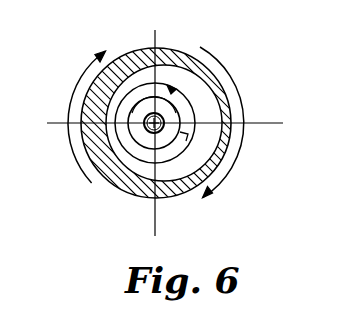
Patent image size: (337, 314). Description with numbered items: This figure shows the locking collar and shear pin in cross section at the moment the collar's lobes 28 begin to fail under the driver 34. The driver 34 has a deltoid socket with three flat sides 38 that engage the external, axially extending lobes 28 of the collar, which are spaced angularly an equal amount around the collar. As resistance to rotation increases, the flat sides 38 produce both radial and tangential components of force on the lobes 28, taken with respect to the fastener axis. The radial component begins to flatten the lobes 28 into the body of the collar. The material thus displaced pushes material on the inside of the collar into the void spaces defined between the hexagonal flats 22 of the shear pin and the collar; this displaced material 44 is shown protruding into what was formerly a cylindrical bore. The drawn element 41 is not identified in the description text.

The housing end plate 22 is at (125, 108).
The direction of rotation arrows 28 is at (97, 74).
The housing wall 34 is at (208, 93).
The rotor sleeve 38 is at (120, 71).
The rotor 41 is at (220, 120).
The shaft hub 44 is at (165, 155).